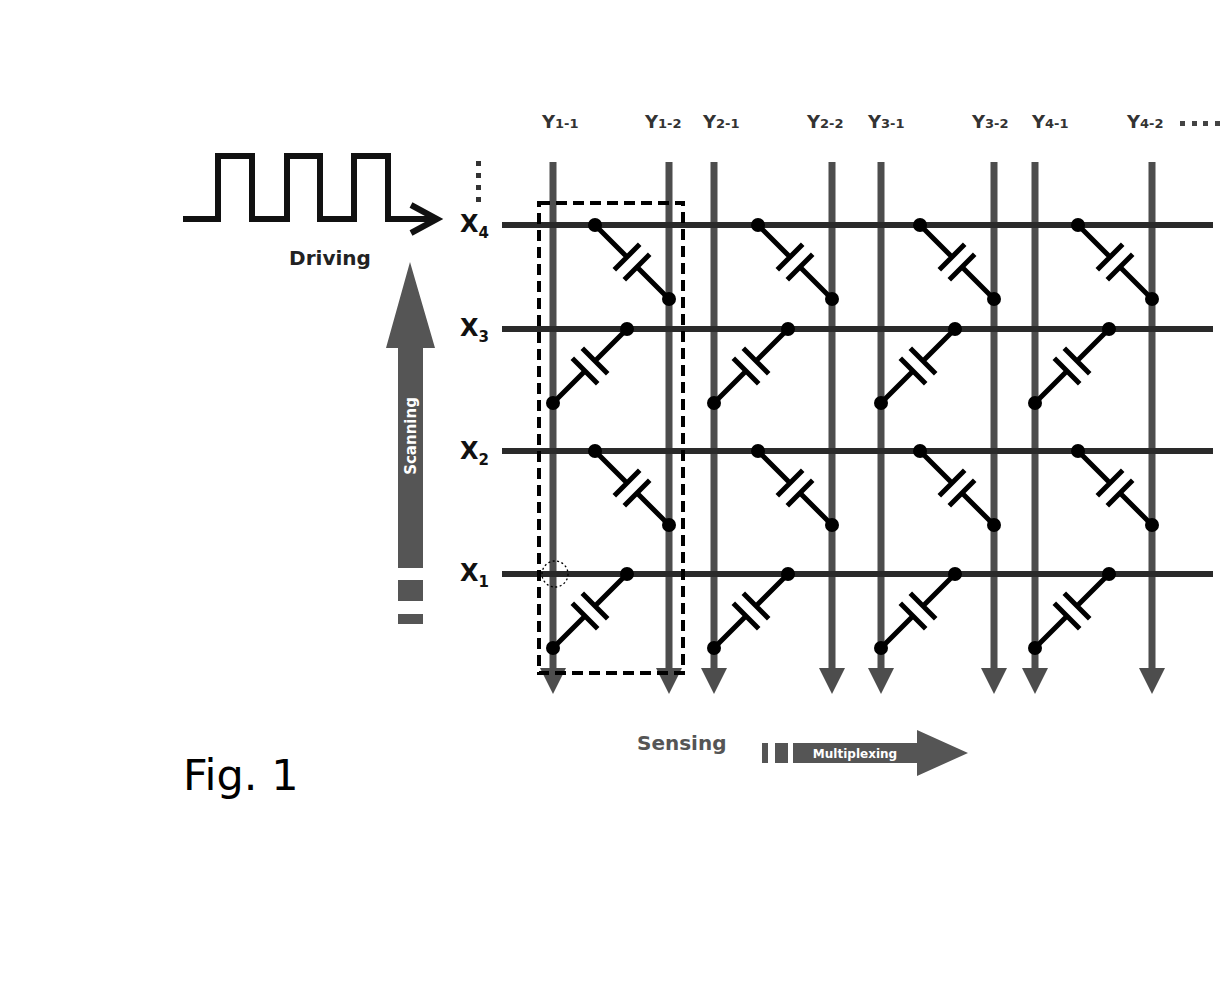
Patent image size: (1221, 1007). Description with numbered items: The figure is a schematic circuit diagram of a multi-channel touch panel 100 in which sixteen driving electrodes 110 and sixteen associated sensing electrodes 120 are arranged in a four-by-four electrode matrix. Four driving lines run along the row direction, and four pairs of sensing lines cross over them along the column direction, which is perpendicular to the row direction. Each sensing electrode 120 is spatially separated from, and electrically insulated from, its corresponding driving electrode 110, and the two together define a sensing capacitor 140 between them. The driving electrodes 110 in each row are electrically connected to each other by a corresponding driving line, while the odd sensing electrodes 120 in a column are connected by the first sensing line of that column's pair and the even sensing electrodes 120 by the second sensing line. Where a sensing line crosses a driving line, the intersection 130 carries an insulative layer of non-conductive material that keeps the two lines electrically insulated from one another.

The multi-channel touch panel 100 is at (892, 47).
The driving electrode 110 is at (630, 580).
The sensing electrode 120 is at (560, 652).
The intersection 130 is at (541, 564).
The sensing capacitor 140 is at (552, 590).